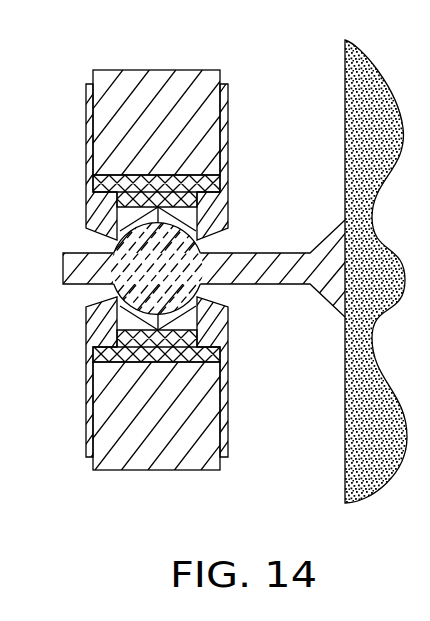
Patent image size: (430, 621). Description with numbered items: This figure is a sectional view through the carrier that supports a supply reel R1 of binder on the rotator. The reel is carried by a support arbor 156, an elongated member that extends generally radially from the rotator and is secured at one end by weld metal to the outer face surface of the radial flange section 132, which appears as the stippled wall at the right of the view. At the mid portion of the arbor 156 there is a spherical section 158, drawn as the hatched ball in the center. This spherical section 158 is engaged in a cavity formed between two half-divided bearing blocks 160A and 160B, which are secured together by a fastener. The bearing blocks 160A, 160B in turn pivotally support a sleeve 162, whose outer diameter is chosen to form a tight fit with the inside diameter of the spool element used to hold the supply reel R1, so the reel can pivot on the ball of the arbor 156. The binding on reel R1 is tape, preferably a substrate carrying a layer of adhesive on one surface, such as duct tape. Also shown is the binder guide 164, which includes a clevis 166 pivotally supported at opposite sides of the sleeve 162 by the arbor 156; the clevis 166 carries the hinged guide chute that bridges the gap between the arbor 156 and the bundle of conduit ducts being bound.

The supply reel R1 is at (118, 68).
The clevis 166 is at (222, 83).
The sleeve 162 is at (222, 362).
The bearing block 160A is at (203, 247).
The bearing block 160B is at (107, 244).
The spherical section 158 is at (112, 295).
The support arbor 156 is at (237, 285).
The radial flange section 132 is at (343, 152).
The binder guide 164 is at (267, 59).